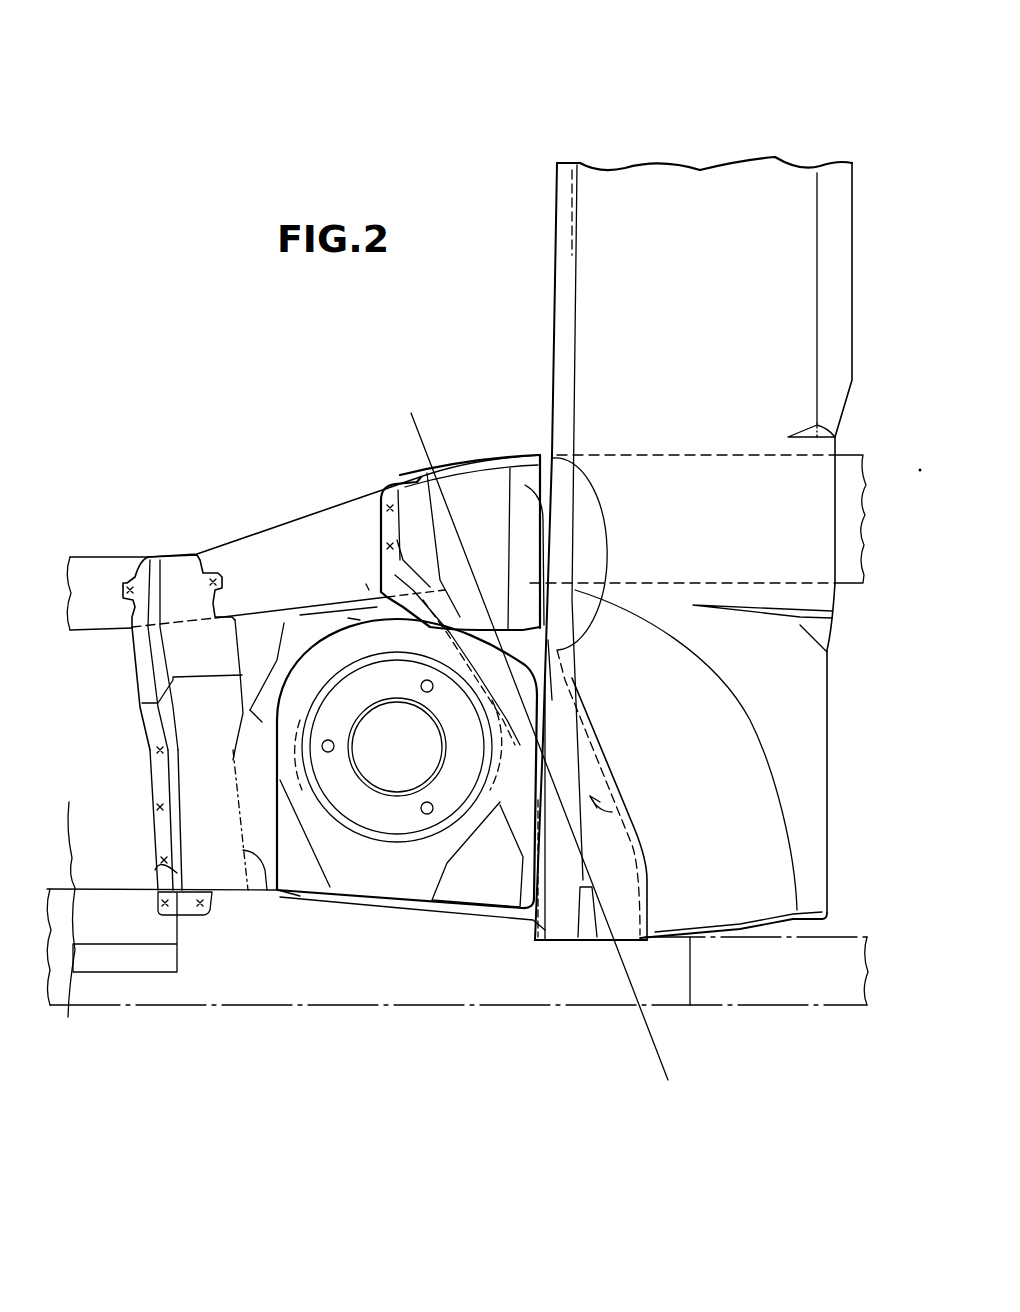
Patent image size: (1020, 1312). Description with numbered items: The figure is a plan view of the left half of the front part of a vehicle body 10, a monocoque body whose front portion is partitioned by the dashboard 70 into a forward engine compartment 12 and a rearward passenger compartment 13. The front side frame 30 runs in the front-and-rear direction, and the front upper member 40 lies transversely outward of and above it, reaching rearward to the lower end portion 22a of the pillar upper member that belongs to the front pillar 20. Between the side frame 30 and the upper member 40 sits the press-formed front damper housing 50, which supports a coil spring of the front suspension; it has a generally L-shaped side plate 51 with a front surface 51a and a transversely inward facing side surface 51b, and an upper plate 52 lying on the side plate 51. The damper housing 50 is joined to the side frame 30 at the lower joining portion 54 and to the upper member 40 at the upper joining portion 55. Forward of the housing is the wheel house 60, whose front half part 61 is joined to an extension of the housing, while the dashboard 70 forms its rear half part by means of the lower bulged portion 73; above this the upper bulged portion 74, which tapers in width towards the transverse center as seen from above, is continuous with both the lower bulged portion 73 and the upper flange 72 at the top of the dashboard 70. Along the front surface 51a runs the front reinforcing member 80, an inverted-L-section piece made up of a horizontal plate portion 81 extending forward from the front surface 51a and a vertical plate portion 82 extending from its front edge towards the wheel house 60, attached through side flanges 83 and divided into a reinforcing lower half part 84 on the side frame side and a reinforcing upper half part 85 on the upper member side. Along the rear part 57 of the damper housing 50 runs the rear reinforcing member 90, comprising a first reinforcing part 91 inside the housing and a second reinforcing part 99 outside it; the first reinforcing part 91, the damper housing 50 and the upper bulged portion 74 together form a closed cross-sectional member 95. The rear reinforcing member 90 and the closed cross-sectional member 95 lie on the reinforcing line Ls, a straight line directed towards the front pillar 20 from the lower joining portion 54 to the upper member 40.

The vehicle body 10 is at (516, 110).
The engine compartment 12 is at (104, 349).
The passenger compartment 13 is at (848, 764).
The front pillar 20 is at (779, 971).
The lower end portion of pillar upper member 22a is at (692, 988).
The front side frame 30 is at (88, 548).
The front upper member 40 is at (598, 1012).
The front damper housing 50 is at (367, 875).
The side plate 51 is at (310, 633).
The front surface 51a is at (271, 725).
The side surface 51b is at (353, 617).
The upper plate 52 is at (403, 828).
The lower joining portion 54 is at (368, 590).
The upper joining portion 55 is at (440, 922).
The rear part of damper housing 57 is at (540, 727).
The wheel house 60 is at (95, 978).
The front half part of wheel house 61 is at (68, 1017).
The dashboard 70 is at (703, 200).
The upper flange 72 is at (540, 945).
The lower bulged portion 73 is at (735, 700).
The upper bulged portion 74 is at (645, 853).
The front reinforcing member 80 is at (84, 675).
The horizontal plate portion 81 is at (223, 872).
The vertical plate portion 82 is at (175, 870).
The side flanges of front reinforcing member 83 is at (157, 837).
The reinforcing lower half part 84 is at (185, 662).
The reinforcing upper half part 85 is at (197, 763).
The rear reinforcing member 90 is at (443, 360).
The first reinforcing part 91 is at (540, 453).
The closed cross-sectional member 95 is at (612, 812).
The second reinforcing part 99 is at (472, 487).
The reinforcing line Ls is at (539, 787).